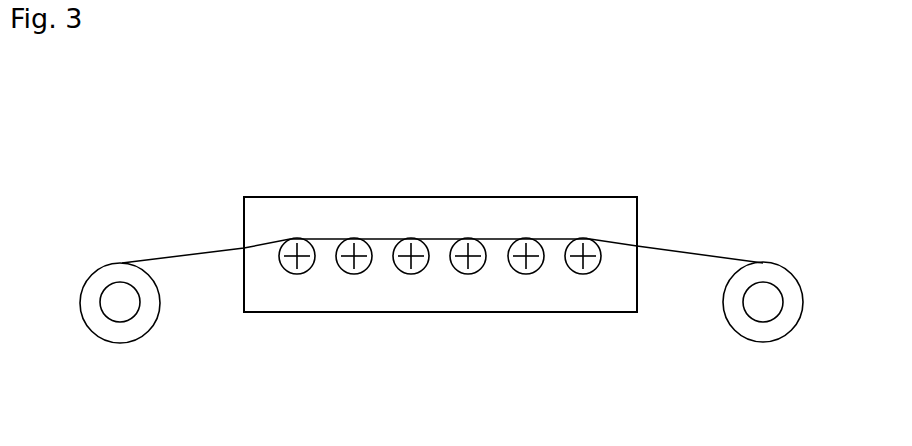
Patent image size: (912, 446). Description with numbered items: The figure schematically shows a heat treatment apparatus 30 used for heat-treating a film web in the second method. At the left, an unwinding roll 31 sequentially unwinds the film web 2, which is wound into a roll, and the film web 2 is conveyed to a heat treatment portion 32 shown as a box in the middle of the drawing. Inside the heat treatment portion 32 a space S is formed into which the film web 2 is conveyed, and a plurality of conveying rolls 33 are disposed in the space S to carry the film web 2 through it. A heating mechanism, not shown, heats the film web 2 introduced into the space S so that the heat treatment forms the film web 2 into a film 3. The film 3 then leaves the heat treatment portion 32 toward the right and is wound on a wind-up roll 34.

The heat treatment apparatus 30 is at (633, 110).
The heat treatment portion 32 is at (314, 196).
The space S is at (480, 216).
The conveying rolls 33 is at (355, 274).
The film web 2 is at (183, 250).
The film 3 is at (697, 248).
The unwinding roll 31 is at (120, 302).
The wind-up roll 34 is at (765, 302).